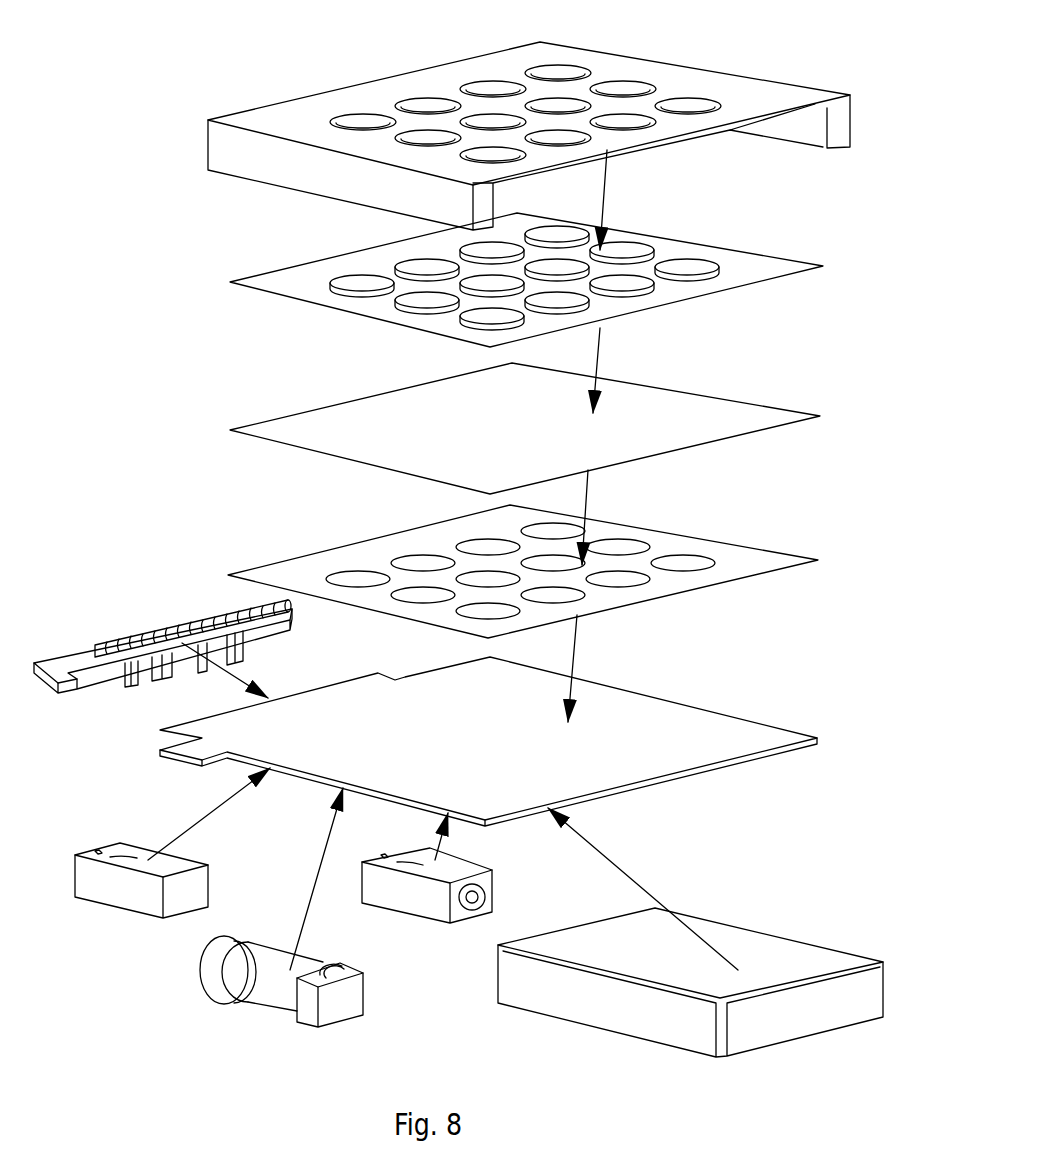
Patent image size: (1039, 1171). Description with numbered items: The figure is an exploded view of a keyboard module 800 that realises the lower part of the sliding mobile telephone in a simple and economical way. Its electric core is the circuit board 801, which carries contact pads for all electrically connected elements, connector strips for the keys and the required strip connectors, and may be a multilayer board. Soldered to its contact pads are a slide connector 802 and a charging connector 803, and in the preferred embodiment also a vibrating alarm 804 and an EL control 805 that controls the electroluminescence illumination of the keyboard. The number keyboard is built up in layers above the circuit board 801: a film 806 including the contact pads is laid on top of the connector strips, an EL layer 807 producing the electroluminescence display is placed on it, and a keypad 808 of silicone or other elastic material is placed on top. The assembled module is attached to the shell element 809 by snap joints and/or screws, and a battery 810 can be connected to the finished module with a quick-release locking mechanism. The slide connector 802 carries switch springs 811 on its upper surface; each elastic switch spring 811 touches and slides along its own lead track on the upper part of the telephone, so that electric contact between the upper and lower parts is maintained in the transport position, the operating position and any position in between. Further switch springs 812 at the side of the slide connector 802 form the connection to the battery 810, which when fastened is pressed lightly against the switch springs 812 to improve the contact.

The keyboard module 800 is at (162, 78).
The circuit board 801 is at (757, 738).
The slide connector 802 is at (40, 683).
The charging connector 803 is at (432, 908).
The vibrating alarm 804 is at (262, 988).
The EL control 805 is at (132, 898).
The film 806 is at (770, 558).
The EL layer 807 is at (755, 415).
The keypad 808 is at (763, 267).
The shell element 809 is at (786, 97).
The battery 810 is at (807, 957).
The switch spring 811 is at (100, 653).
The switch spring 812 is at (132, 687).